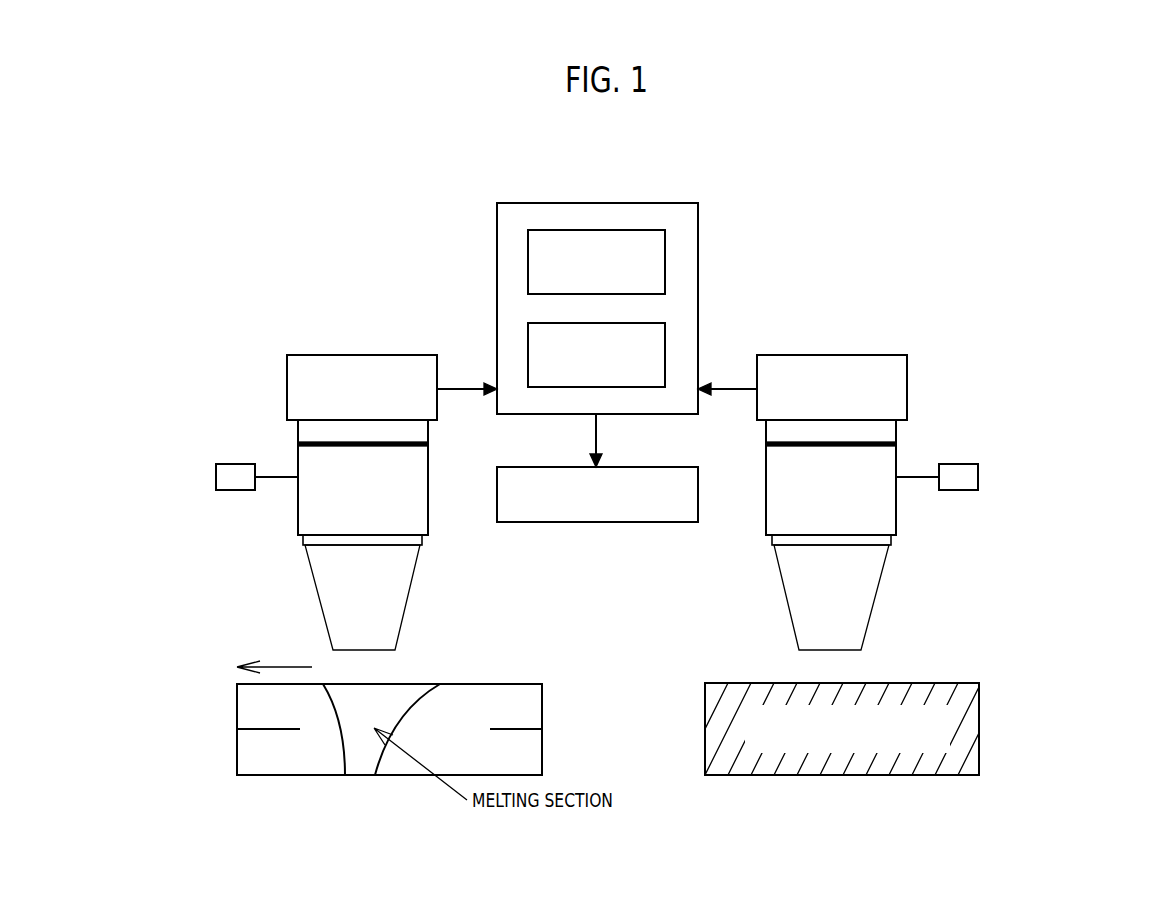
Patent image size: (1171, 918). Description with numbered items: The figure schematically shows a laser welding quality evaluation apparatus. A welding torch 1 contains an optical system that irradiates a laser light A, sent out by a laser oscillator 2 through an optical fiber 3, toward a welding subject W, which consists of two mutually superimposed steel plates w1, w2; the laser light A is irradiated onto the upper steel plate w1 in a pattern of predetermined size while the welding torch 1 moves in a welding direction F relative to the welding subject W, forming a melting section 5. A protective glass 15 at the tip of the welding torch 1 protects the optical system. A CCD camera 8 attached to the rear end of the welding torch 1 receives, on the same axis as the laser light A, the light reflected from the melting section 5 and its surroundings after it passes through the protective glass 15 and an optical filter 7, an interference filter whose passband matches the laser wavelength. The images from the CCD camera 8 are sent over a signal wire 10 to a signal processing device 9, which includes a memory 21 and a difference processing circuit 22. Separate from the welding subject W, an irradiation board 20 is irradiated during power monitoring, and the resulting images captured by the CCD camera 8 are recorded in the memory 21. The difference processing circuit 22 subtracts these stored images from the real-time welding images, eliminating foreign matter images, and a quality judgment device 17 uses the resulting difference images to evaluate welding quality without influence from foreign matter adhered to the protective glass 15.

The welding torch 1 is at (428, 513).
The laser oscillator 2 is at (216, 475).
The optical fiber 3 is at (285, 481).
The melting section 5 is at (392, 695).
The optical filter 7 is at (945, 430).
The CCD camera 8 is at (287, 381).
The signal processing device 9 is at (698, 283).
The signal wire 10 is at (462, 388).
The protective glass 15 is at (933, 563).
The quality judgment device 17 is at (596, 522).
The irradiation board 20 is at (979, 720).
The memory 21 is at (665, 262).
The difference processing circuit 22 is at (665, 350).
The laser light A is at (910, 607).
The welding direction F is at (268, 651).
The welding subject W is at (507, 696).
The upper steel plate w1 is at (245, 711).
The lower steel plate w2 is at (245, 751).